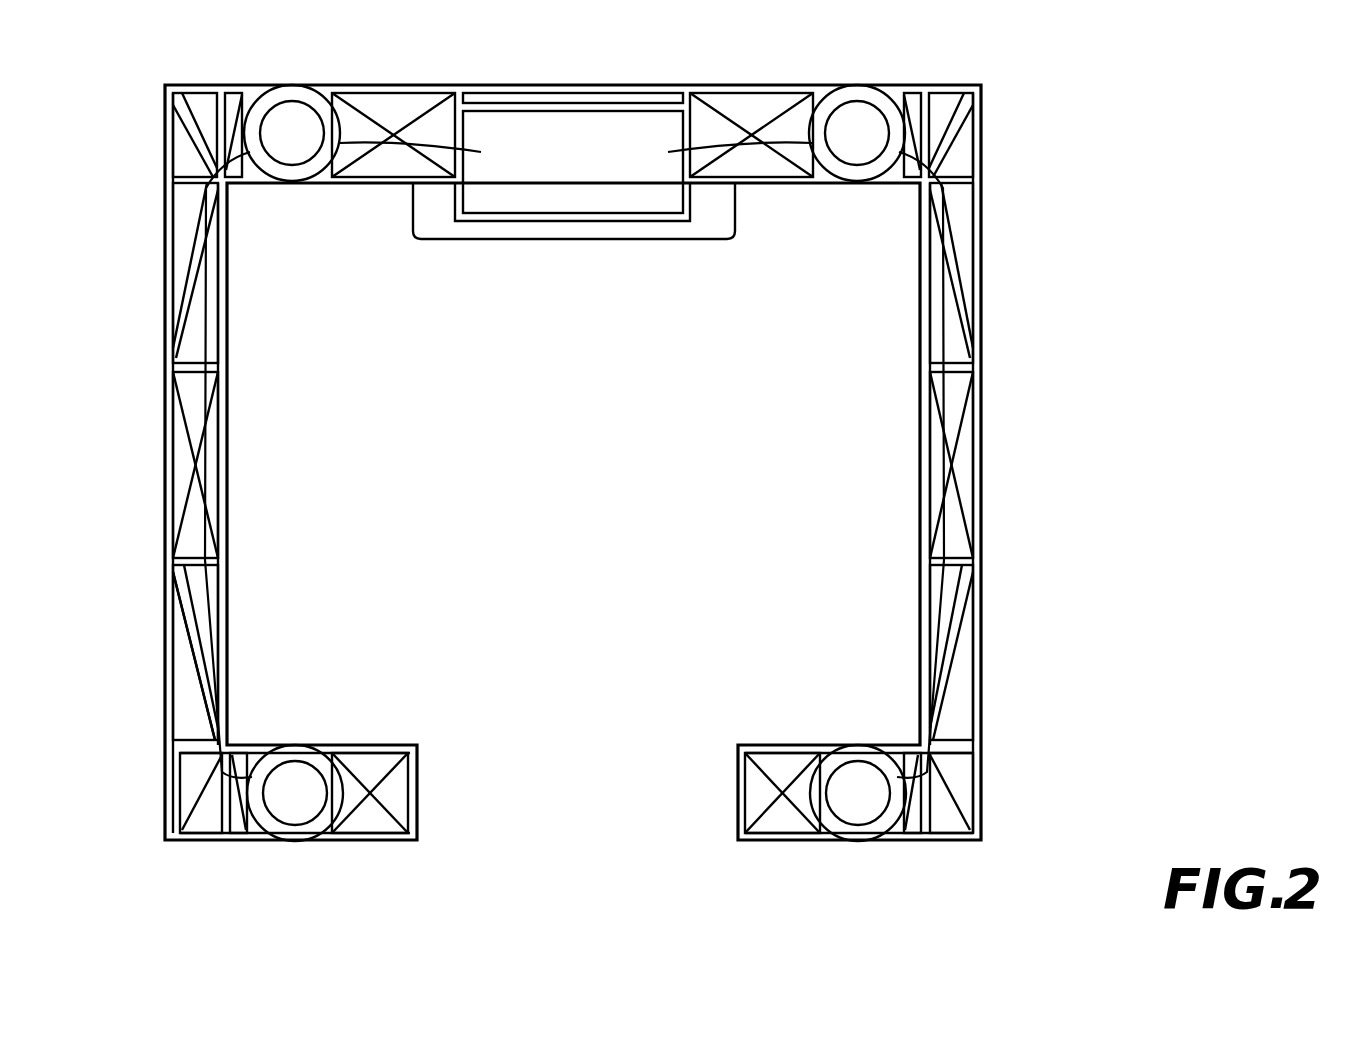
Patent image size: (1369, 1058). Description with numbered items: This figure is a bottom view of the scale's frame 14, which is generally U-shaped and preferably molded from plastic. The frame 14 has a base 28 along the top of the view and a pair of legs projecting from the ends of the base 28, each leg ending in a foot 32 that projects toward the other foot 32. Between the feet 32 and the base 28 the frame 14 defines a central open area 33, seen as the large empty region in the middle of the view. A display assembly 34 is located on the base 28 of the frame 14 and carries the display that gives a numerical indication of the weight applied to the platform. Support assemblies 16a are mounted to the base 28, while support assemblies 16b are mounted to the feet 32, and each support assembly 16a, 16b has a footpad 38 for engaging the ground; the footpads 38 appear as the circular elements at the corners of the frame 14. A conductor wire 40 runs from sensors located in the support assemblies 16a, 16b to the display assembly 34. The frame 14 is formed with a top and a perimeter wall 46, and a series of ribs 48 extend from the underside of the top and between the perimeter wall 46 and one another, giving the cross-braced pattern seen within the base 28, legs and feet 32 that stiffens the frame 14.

The frame 14 is at (981, 187).
The base 28 is at (387, 105).
The display assembly 34 is at (572, 128).
The support assembly 16a is at (276, 168).
The footpad 38 is at (288, 138).
The perimeter wall 46 is at (175, 357).
The ribs 48 is at (212, 528).
The conductor wire 40 is at (212, 623).
The support assembly 16b is at (293, 753).
The foot 32 is at (368, 762).
The central open area 33 is at (528, 538).